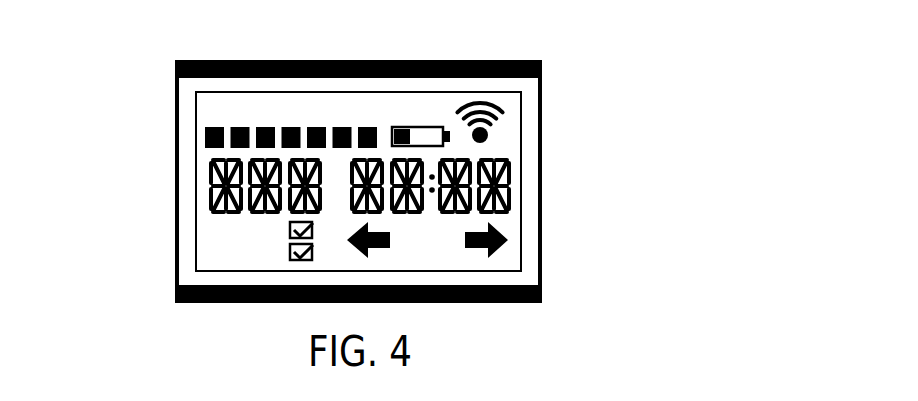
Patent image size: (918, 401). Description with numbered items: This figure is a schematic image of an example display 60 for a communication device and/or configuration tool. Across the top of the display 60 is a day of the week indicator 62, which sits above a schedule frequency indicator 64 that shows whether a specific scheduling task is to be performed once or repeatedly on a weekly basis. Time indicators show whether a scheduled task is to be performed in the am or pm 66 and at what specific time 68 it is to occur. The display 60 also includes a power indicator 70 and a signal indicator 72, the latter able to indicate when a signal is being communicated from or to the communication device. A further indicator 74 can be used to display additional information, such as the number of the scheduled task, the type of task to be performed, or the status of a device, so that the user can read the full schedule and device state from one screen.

The display 60 is at (93, 94).
The day of the week indicator 62 is at (252, 98).
The schedule frequency indicator 64 is at (211, 255).
The am/pm time indicator 66 is at (507, 241).
The specific time indicator 68 is at (500, 185).
The power indicator 70 is at (410, 128).
The signal indicator 72 is at (500, 105).
The further indicator 74 is at (208, 185).